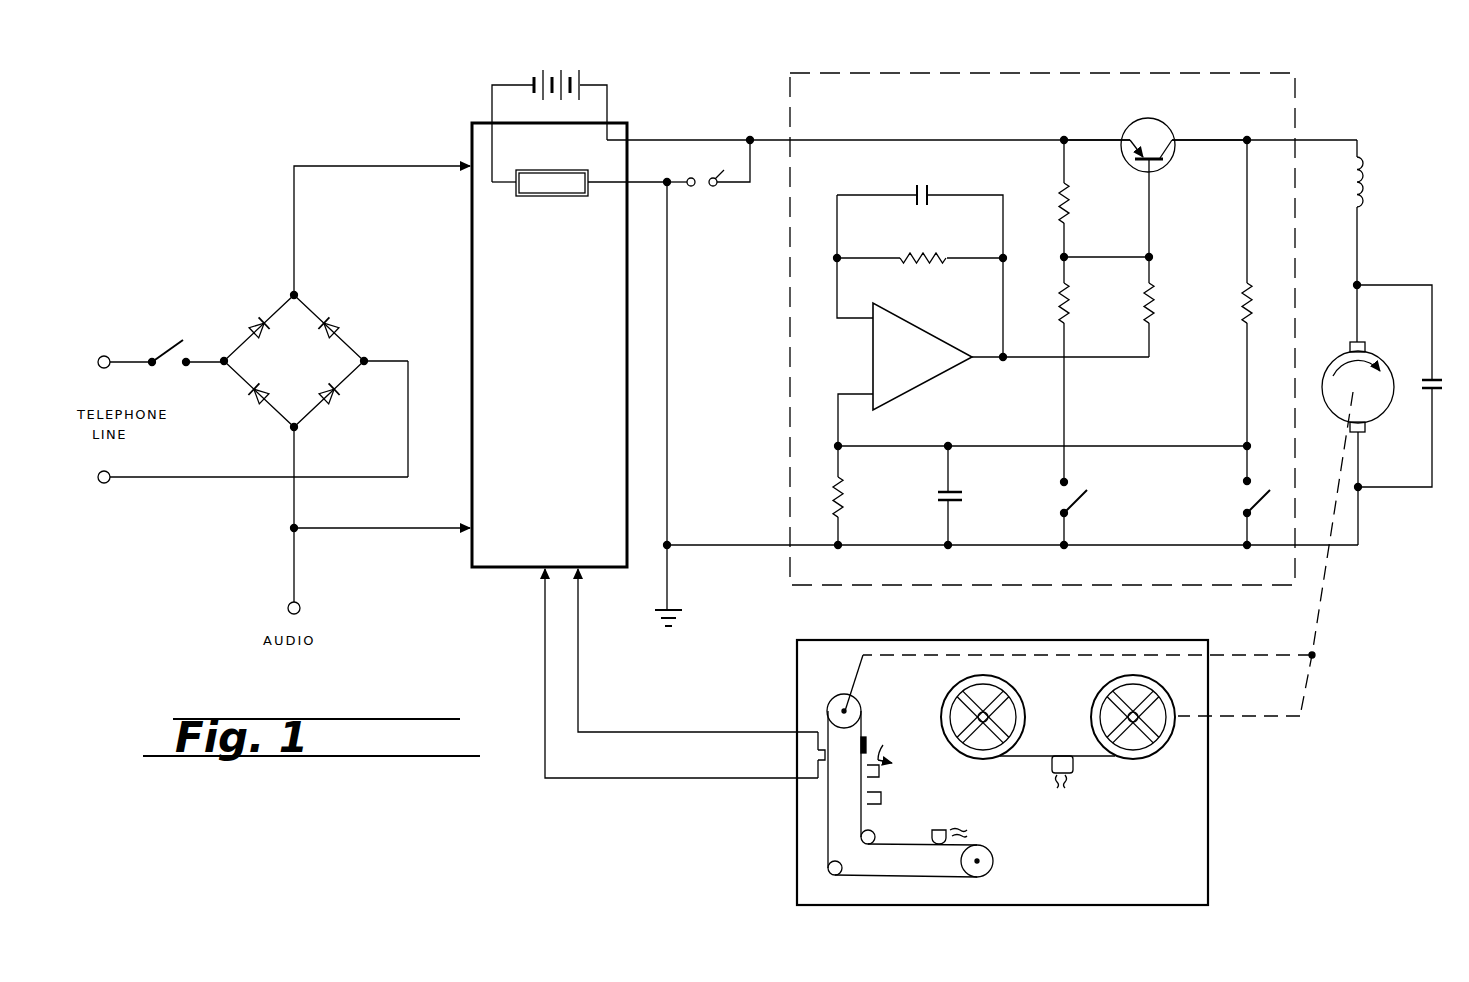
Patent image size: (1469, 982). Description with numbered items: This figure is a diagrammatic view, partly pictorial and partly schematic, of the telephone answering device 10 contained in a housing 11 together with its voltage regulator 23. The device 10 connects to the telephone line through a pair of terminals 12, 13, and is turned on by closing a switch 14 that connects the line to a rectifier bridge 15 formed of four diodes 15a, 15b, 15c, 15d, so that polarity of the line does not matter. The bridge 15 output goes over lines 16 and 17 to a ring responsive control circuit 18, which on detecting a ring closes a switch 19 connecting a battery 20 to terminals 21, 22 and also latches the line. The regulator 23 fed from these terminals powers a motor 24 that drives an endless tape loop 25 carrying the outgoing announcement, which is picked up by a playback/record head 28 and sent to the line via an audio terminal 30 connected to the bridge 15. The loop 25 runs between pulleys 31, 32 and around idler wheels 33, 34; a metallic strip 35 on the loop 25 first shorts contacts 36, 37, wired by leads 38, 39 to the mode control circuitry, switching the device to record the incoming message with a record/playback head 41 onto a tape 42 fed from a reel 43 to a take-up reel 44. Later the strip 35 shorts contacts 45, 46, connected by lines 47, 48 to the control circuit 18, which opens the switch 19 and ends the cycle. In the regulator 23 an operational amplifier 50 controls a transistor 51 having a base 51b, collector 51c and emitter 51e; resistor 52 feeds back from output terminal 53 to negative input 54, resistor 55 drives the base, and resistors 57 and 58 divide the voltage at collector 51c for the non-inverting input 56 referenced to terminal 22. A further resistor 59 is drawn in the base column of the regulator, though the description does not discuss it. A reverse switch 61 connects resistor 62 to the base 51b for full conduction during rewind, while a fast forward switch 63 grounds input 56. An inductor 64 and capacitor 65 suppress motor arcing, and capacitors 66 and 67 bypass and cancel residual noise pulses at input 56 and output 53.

The telephone answering device 10 is at (218, 553).
The housing 11 is at (1213, 777).
The terminal 12 is at (104, 356).
The terminal 13 is at (104, 483).
The switch 14 is at (172, 350).
The rectifier bridge 15 is at (293, 360).
The diode 15a is at (253, 324).
The diode 15b is at (334, 322).
The diode 15c is at (257, 405).
The diode 15d is at (334, 400).
The line 16 is at (392, 166).
The line 17 is at (330, 530).
The ring responsive control circuit 18 is at (555, 407).
The switch 19 is at (538, 197).
The battery 20 is at (560, 72).
The terminal 21 is at (731, 177).
The negative voltage terminal 22 is at (689, 177).
The voltage regulator 23 is at (1244, 103).
The motor 24 is at (1373, 407).
The endless tape loop 25 is at (937, 880).
The playback/record head 28 is at (950, 828).
The audio terminal 30 is at (300, 611).
The pulley 31 is at (828, 705).
The pulley 32 is at (980, 861).
The idler wheel 33 is at (828, 870).
The idler wheel 34 is at (861, 838).
The metallic strip 35 is at (866, 742).
The electrical contact 36 is at (878, 778).
The electrical contact 37 is at (882, 795).
The electrical lead 38 is at (901, 748).
The electrical lead 39 is at (880, 807).
The record/playback head 41 is at (1073, 765).
The tape 42 is at (1037, 758).
The reel 43 is at (1015, 702).
The take-up reel 44 is at (1110, 690).
The electrical contact 45 is at (813, 750).
The electrical contact 46 is at (813, 760).
The line 47 is at (655, 731).
The line 48 is at (667, 778).
The operational amplifier 50 is at (918, 366).
The transistor 51 is at (1158, 164).
The base 51b is at (1150, 220).
The collector 51c is at (1190, 138).
The emitter 51e is at (1111, 138).
The resistor 52 is at (934, 253).
The amplifier output terminal 53 is at (1021, 360).
The negative input 54 is at (840, 282).
The resistor 55 is at (1154, 298).
The non-inverting input terminal 56 is at (841, 393).
The resistor 57 is at (1252, 300).
The resistor 58 is at (836, 498).
The resistor 59 is at (1069, 205).
The reverse switch 61 is at (1050, 513).
The resistor 62 is at (1070, 300).
The switch 63 is at (1265, 485).
The inductor 64 is at (1366, 196).
The capacitor 65 is at (1448, 384).
The capacitor 66 is at (935, 497).
The capacitor 67 is at (924, 182).